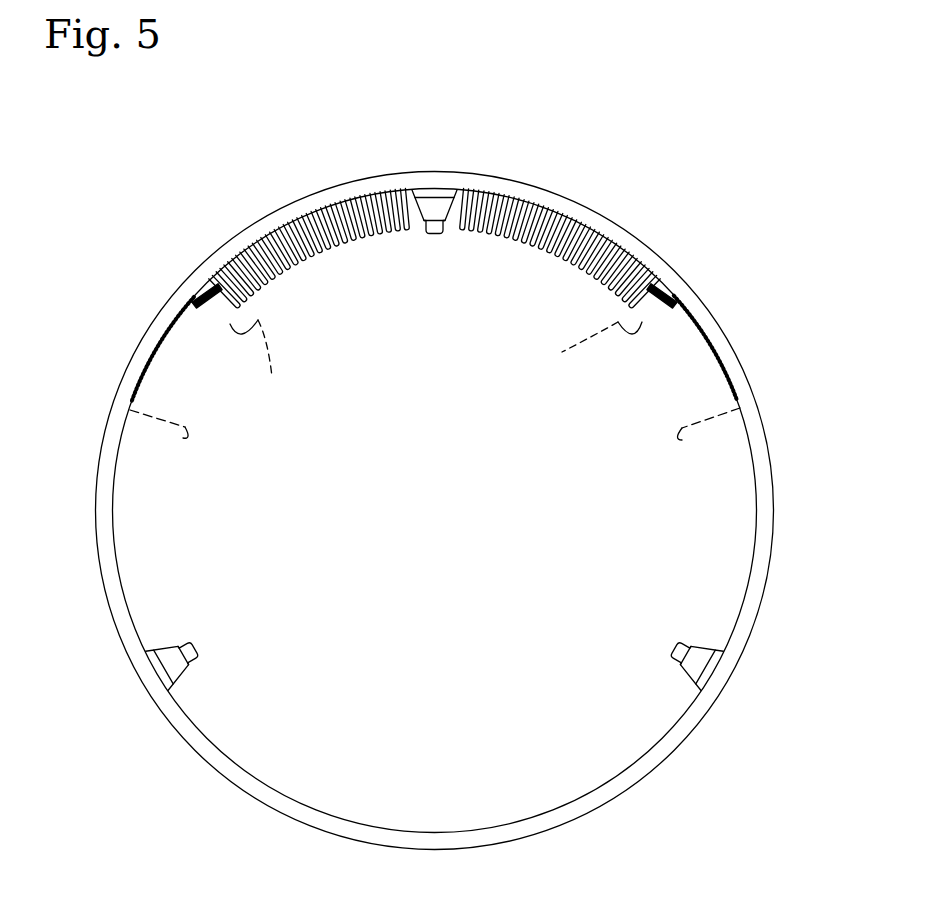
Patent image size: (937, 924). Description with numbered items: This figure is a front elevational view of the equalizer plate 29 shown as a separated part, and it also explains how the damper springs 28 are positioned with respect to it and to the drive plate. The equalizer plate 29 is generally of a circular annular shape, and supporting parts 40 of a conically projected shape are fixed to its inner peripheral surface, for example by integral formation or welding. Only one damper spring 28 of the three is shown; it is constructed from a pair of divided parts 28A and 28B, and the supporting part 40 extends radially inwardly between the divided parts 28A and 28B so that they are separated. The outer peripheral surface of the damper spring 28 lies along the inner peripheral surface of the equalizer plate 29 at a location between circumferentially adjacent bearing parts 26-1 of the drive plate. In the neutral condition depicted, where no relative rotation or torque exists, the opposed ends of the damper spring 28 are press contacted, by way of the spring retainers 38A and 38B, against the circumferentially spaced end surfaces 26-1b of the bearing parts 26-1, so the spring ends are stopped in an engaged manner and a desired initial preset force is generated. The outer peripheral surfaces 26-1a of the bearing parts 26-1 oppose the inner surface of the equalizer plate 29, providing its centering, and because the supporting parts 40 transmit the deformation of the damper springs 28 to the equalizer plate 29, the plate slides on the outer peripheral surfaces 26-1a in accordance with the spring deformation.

The equalizer plate 29 is at (762, 458).
The bearing part 26-1 is at (175, 362).
The outer peripheral surface 26-1a is at (745, 362).
The end surface 26-1b is at (435, 380).
The damper spring 28 is at (435, 265).
The divided part 28A is at (327, 248).
The divided part 28B is at (551, 248).
The spring retainer 38A is at (212, 298).
The spring retainer 38B is at (660, 300).
The supporting part 40 is at (430, 208).